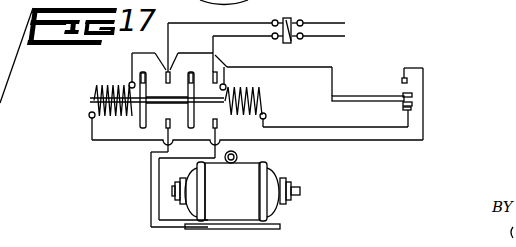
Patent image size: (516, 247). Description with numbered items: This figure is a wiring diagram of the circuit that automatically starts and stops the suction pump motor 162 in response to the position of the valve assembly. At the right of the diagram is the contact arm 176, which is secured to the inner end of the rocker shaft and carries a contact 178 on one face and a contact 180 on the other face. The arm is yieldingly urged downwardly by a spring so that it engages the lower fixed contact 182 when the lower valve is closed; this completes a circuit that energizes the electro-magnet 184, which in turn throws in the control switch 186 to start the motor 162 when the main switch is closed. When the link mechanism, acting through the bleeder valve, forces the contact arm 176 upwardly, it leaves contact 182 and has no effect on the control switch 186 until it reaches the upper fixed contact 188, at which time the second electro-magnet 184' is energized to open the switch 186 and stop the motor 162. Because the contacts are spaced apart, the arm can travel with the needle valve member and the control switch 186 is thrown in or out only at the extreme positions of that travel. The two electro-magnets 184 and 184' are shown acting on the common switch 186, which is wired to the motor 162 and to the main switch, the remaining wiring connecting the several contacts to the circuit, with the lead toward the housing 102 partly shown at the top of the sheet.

The housing 102 is at (237, 3).
The electric motor 162 is at (243, 182).
The contact arm 176 is at (357, 96).
The contact 178 is at (413, 95).
The contact 180 is at (413, 104).
The contact 182 is at (410, 109).
The electro-magnet 184 is at (263, 101).
The second electro-magnet 184' is at (83, 104).
The control switch 186 is at (170, 100).
The contact 188 is at (407, 81).